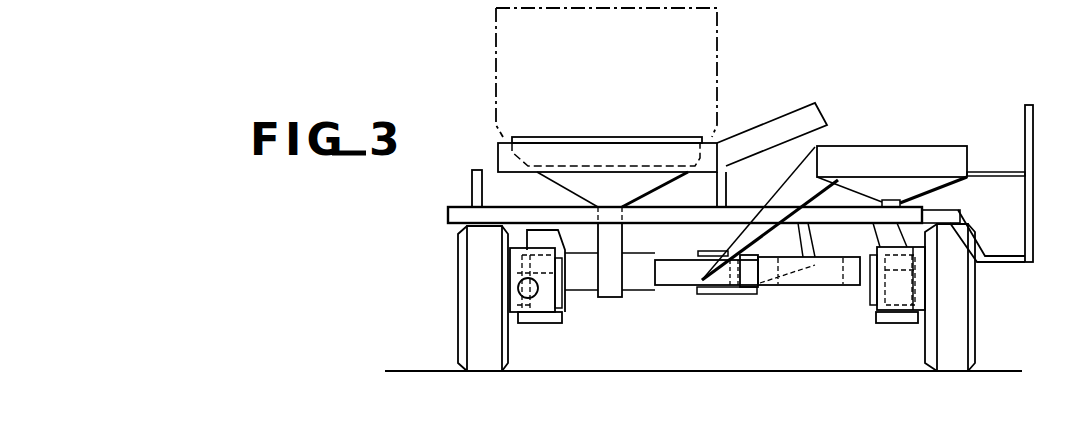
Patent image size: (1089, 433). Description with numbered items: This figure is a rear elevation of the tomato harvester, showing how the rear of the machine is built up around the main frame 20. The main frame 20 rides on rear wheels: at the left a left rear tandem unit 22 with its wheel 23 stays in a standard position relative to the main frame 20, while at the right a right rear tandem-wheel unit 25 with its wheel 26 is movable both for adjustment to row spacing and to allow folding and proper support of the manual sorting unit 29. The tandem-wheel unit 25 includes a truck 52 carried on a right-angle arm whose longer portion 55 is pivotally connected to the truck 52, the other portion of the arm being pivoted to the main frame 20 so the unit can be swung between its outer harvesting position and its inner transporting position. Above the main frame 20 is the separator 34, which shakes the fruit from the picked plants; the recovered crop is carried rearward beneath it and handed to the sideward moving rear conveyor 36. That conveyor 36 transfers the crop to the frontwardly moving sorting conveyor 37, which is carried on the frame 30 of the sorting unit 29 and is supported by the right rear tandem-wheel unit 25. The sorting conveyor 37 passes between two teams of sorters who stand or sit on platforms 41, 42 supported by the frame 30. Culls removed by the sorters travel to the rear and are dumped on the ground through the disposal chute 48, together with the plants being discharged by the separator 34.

The main frame 20 is at (680, 212).
The left rear tandem unit 22 is at (517, 336).
The wheel 23 is at (470, 323).
The right rear tandem-wheel unit 25 is at (917, 328).
The wheel 26 is at (972, 340).
The manual sorting unit 29 is at (972, 133).
The frame 30 is at (950, 187).
The separator 34 is at (712, 48).
The sideward moving rear conveyor 36 is at (617, 148).
The frontwardly moving sorting conveyor 37 is at (878, 151).
The platform 41 is at (1023, 250).
The platform 42 is at (778, 283).
The disposal chute 48 is at (830, 186).
The truck 52 is at (892, 298).
The longer portion 55 is at (829, 278).